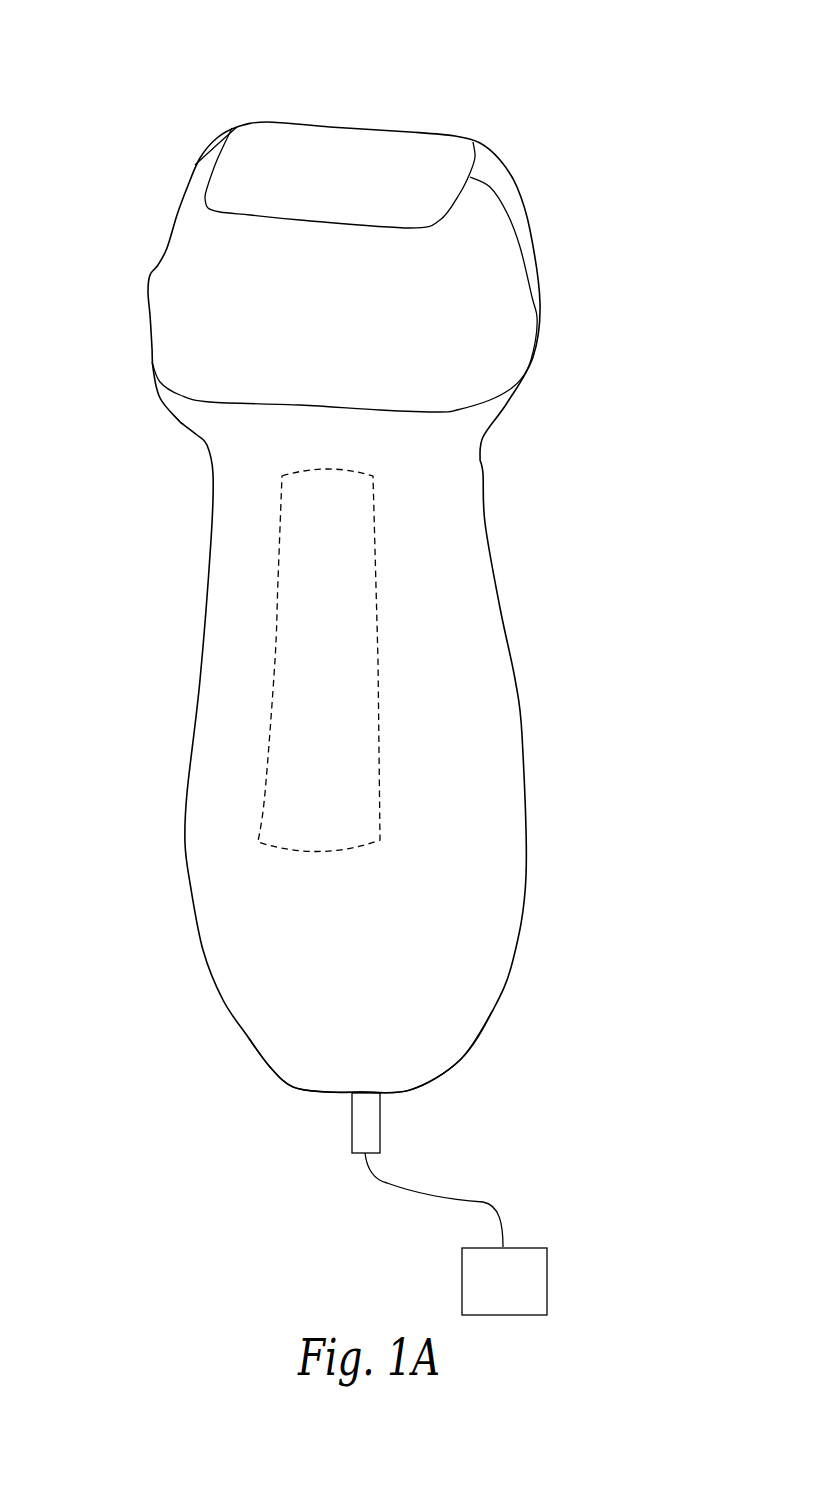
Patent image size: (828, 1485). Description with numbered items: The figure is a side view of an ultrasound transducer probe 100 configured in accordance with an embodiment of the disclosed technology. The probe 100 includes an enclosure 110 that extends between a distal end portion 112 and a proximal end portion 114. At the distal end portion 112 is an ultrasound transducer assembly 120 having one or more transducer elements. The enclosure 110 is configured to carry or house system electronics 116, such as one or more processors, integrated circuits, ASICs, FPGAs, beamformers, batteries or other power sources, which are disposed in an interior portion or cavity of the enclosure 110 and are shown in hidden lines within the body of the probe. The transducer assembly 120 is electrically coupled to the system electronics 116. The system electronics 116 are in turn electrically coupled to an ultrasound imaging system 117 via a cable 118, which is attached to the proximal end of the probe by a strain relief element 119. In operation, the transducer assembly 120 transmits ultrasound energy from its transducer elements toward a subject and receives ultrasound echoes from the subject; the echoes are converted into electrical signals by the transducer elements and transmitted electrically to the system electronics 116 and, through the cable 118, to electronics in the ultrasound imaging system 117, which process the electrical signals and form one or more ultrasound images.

The ultrasound transducer probe 100 is at (176, 80).
The enclosure 110 is at (410, 679).
The distal end portion 112 is at (545, 194).
The proximal end portion 114 is at (490, 1073).
The system electronics 116 is at (305, 717).
The ultrasound imaging system 117 is at (548, 1277).
The cable 118 is at (487, 1202).
The strain relief element 119 is at (362, 1117).
The ultrasound transducer assembly 120 is at (343, 160).